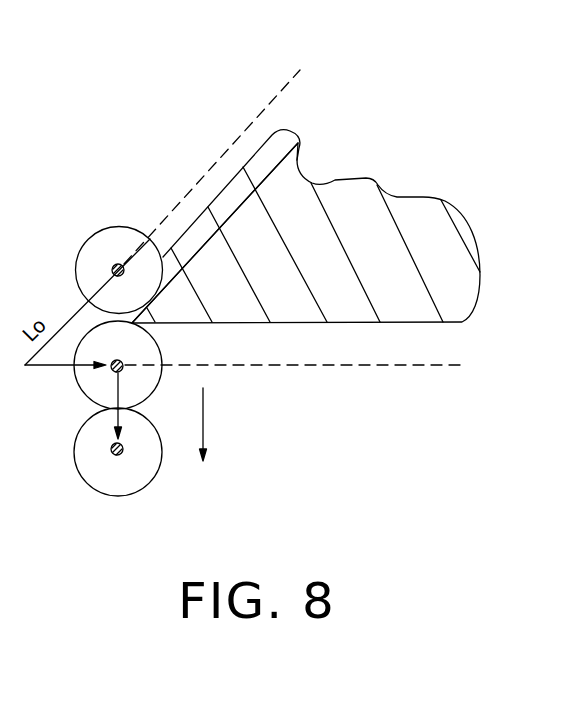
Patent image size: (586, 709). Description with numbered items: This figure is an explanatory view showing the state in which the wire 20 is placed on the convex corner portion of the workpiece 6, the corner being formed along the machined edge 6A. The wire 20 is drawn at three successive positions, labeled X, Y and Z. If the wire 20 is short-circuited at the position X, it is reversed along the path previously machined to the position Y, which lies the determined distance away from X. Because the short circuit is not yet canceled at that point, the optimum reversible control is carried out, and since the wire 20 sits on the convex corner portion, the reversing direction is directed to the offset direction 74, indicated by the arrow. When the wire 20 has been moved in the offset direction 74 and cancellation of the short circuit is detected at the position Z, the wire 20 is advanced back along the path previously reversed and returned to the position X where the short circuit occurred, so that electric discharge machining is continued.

The blade 6 is at (424, 197).
The beveled land of blade 6A is at (231, 180).
The wire 20 is at (90, 238).
The offset direction 74 is at (205, 424).